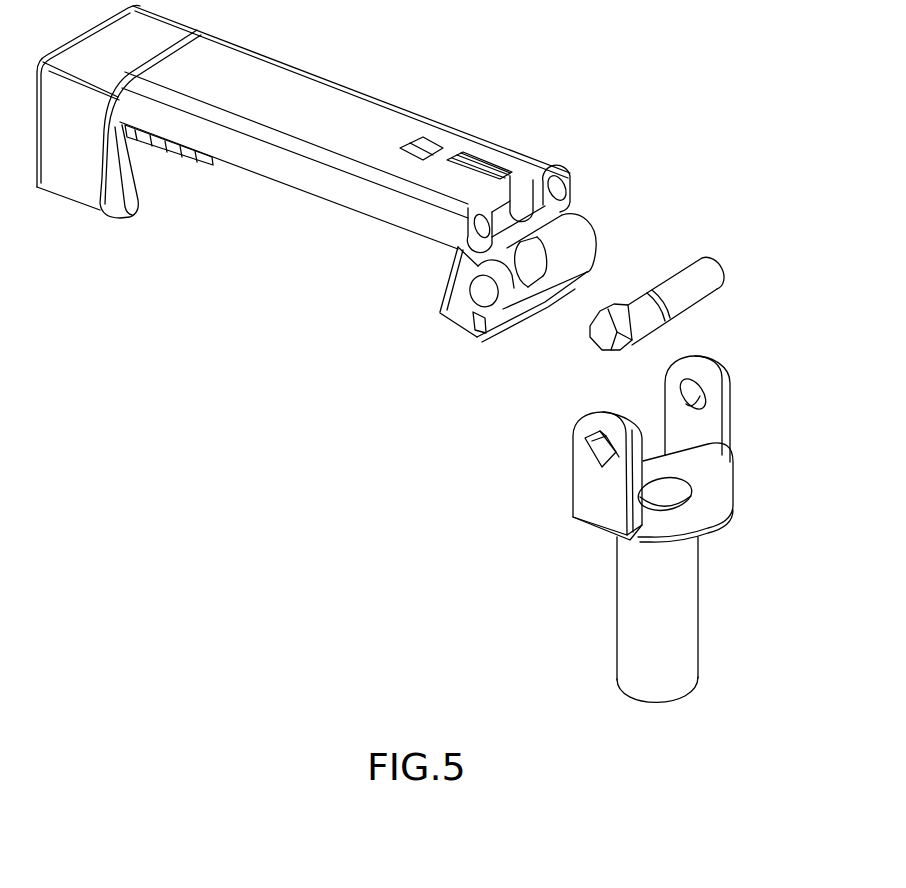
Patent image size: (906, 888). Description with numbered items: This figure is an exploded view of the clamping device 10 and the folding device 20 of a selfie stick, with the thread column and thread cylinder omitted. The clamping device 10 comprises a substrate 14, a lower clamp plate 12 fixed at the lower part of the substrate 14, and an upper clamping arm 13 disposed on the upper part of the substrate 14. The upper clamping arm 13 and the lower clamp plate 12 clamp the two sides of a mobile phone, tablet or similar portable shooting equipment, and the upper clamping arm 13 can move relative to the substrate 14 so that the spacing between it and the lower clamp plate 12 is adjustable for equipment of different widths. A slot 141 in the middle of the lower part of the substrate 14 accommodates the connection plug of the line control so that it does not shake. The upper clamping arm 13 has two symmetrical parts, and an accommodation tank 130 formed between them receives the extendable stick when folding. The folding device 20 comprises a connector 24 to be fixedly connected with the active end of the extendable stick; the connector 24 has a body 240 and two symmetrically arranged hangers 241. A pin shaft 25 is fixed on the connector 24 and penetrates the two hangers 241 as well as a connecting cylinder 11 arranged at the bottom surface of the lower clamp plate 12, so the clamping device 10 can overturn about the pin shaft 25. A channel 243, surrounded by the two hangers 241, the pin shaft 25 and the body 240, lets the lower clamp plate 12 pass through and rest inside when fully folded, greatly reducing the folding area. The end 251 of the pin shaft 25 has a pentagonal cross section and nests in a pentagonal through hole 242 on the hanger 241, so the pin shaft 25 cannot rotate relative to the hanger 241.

The clamping device 10 is at (387, 80).
The substrate 14 is at (274, 69).
The upper clamping arm 13 is at (72, 186).
The accommodation tank 130 is at (170, 188).
The slot 141 is at (523, 170).
The connecting cylinder 11 is at (572, 239).
The lower clamp plate 12 is at (470, 320).
The folding device 20 is at (657, 289).
The pin shaft 25 is at (695, 290).
The end of the pin shaft 251 is at (600, 341).
The connector 24 is at (655, 529).
The body 240 is at (631, 607).
The hangers 241 is at (727, 392).
The pentagonal through hole 242 is at (585, 453).
The channel 243 is at (708, 449).